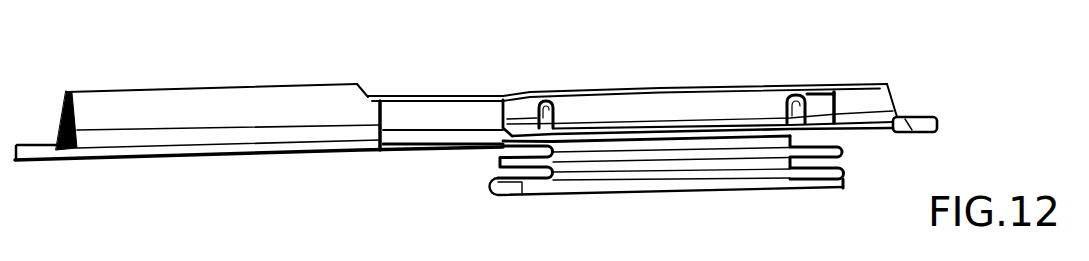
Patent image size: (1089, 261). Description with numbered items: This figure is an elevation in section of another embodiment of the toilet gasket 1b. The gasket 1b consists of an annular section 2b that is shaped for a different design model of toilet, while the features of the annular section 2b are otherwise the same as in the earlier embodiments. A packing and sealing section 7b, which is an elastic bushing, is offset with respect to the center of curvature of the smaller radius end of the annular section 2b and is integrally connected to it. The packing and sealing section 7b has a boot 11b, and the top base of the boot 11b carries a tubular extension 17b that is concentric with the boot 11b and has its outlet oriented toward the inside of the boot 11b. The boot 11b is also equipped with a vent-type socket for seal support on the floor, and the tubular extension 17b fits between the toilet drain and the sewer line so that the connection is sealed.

The gasket 1b is at (212, 164).
The annular section 2b is at (921, 113).
The packing and sealing section 7b is at (484, 163).
The boot 11b is at (513, 187).
The tubular extension 17b is at (560, 107).